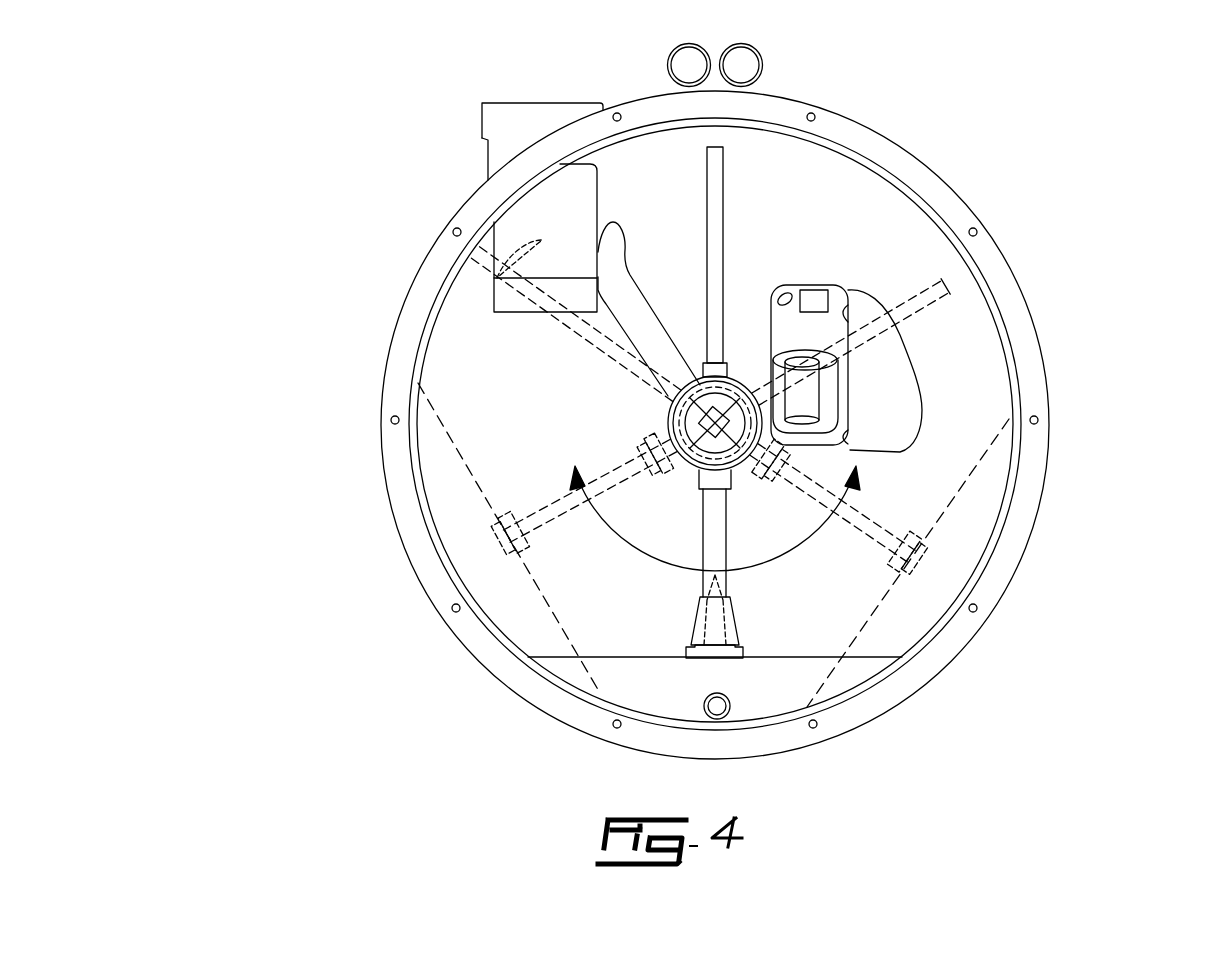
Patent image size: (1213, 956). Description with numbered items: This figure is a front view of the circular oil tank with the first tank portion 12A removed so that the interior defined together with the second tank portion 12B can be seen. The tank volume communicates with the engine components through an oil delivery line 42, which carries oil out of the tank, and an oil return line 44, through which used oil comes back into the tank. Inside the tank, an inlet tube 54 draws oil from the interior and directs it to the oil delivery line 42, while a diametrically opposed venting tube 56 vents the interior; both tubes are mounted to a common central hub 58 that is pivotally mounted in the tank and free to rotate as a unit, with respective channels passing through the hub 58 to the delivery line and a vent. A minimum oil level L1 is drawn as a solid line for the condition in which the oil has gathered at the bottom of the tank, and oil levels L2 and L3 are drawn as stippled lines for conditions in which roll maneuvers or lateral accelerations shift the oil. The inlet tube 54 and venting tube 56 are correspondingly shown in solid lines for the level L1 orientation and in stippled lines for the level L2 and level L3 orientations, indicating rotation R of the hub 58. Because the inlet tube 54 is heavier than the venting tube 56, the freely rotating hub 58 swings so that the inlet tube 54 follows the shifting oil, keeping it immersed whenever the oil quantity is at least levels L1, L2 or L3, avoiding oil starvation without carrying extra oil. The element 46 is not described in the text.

The first tank portion 12A is at (450, 330).
The second tank portion 12B is at (322, 148).
The oil delivery line 42 is at (763, 56).
The oil return line 44 is at (668, 56).
The housing box 46 is at (495, 122).
The inlet tube 54 is at (912, 556).
The venting tube 56 is at (490, 258).
The central hub 58 is at (670, 418).
The minimum oil level L1 is at (878, 650).
The oil level L2 is at (990, 455).
The oil level L3 is at (457, 452).
The rotation arc R is at (715, 534).